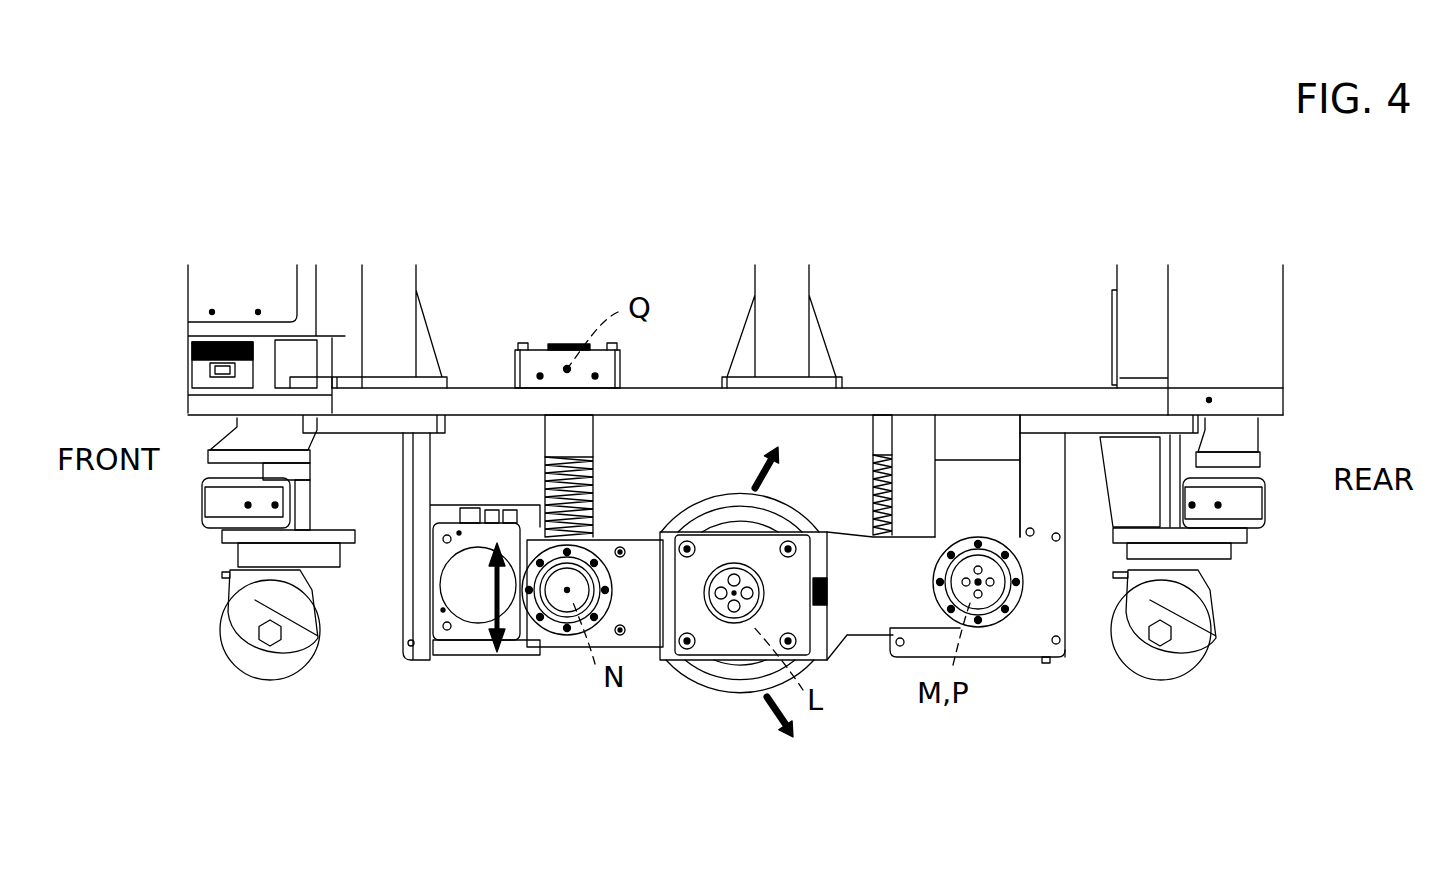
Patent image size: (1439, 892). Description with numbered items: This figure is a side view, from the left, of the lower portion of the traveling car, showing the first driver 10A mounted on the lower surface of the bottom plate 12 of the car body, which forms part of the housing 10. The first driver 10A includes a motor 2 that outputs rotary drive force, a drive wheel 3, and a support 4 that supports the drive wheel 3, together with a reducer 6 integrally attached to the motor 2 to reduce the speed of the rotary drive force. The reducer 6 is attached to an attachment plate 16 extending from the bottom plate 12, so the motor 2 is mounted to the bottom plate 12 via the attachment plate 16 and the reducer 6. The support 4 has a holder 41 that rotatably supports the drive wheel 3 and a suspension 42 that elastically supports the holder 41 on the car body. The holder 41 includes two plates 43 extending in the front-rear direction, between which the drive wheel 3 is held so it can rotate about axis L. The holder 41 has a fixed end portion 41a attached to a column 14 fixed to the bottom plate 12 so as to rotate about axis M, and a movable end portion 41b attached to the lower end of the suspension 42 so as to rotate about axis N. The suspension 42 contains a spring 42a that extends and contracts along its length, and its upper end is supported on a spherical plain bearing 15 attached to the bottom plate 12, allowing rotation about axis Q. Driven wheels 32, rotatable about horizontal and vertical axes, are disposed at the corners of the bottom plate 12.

The motor 2 is at (472, 658).
The drive wheel 3 is at (743, 699).
The support 4 is at (658, 688).
The reducer 6 is at (1035, 610).
The housing 10 is at (1283, 355).
The first driver 10A is at (714, 718).
The bottom plate 12 is at (1080, 388).
The column 14 is at (933, 440).
The spherical plain bearing 15 is at (515, 380).
The attachment plate 16 is at (436, 662).
The driven wheel 32 is at (225, 625).
The holder 41 is at (826, 655).
The fixed end portion 41a is at (1010, 630).
The movable end portion 41b is at (545, 655).
The suspension 42 is at (605, 431).
The spring 42a is at (597, 507).
The plate 43 is at (870, 635).